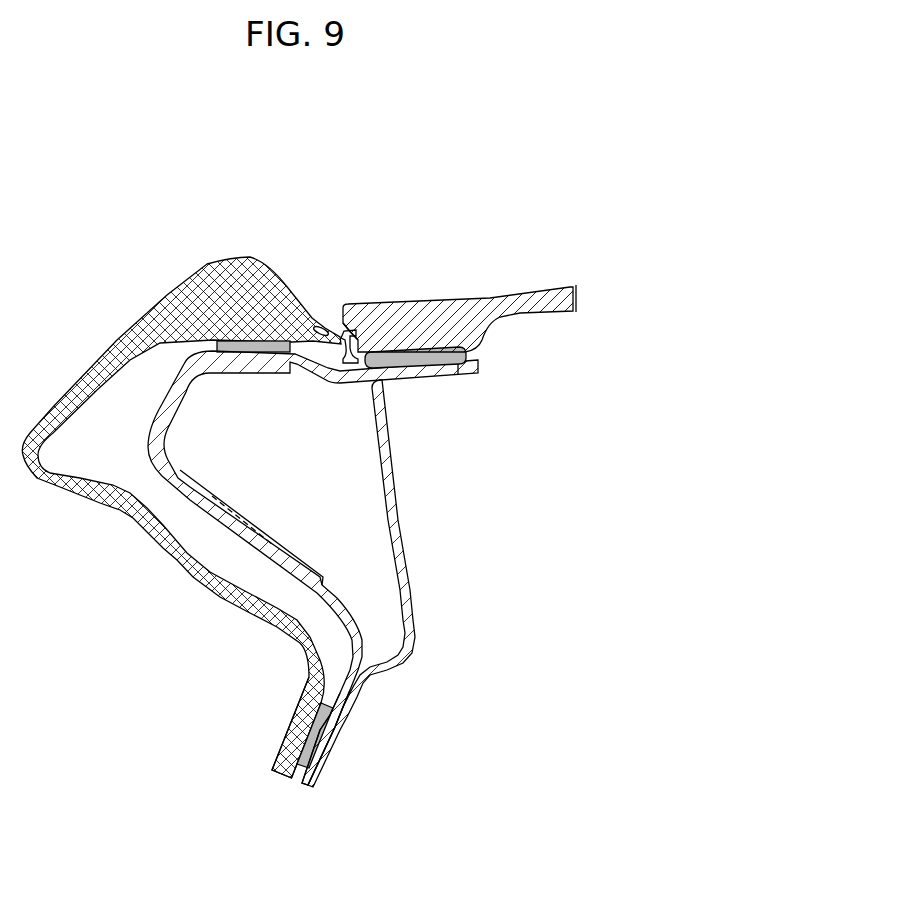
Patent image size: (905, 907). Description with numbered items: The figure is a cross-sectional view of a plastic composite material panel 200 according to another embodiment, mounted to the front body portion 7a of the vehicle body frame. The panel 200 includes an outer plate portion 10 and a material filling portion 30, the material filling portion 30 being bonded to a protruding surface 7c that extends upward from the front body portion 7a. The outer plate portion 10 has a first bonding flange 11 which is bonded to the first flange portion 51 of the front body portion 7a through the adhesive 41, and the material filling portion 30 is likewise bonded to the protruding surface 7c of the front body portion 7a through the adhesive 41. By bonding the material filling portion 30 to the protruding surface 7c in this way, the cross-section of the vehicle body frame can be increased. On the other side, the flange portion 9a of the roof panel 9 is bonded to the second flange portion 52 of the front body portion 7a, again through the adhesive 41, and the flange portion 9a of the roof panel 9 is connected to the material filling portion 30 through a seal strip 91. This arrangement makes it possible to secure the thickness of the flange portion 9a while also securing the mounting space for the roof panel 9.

The plastic composite material panel 200 is at (37, 302).
The outer plate portion 10 is at (67, 361).
The material filling portion 30 is at (159, 292).
The first bonding flange 11 is at (295, 722).
The adhesive 41 is at (218, 342).
The protruding surface 7c is at (278, 356).
The first flange portion 51 is at (342, 688).
The front body portion 7a is at (412, 567).
The second flange portion 52 is at (451, 357).
The roof panel 9 is at (530, 275).
The flange portion 9a is at (433, 310).
The seal strip 91 is at (365, 334).